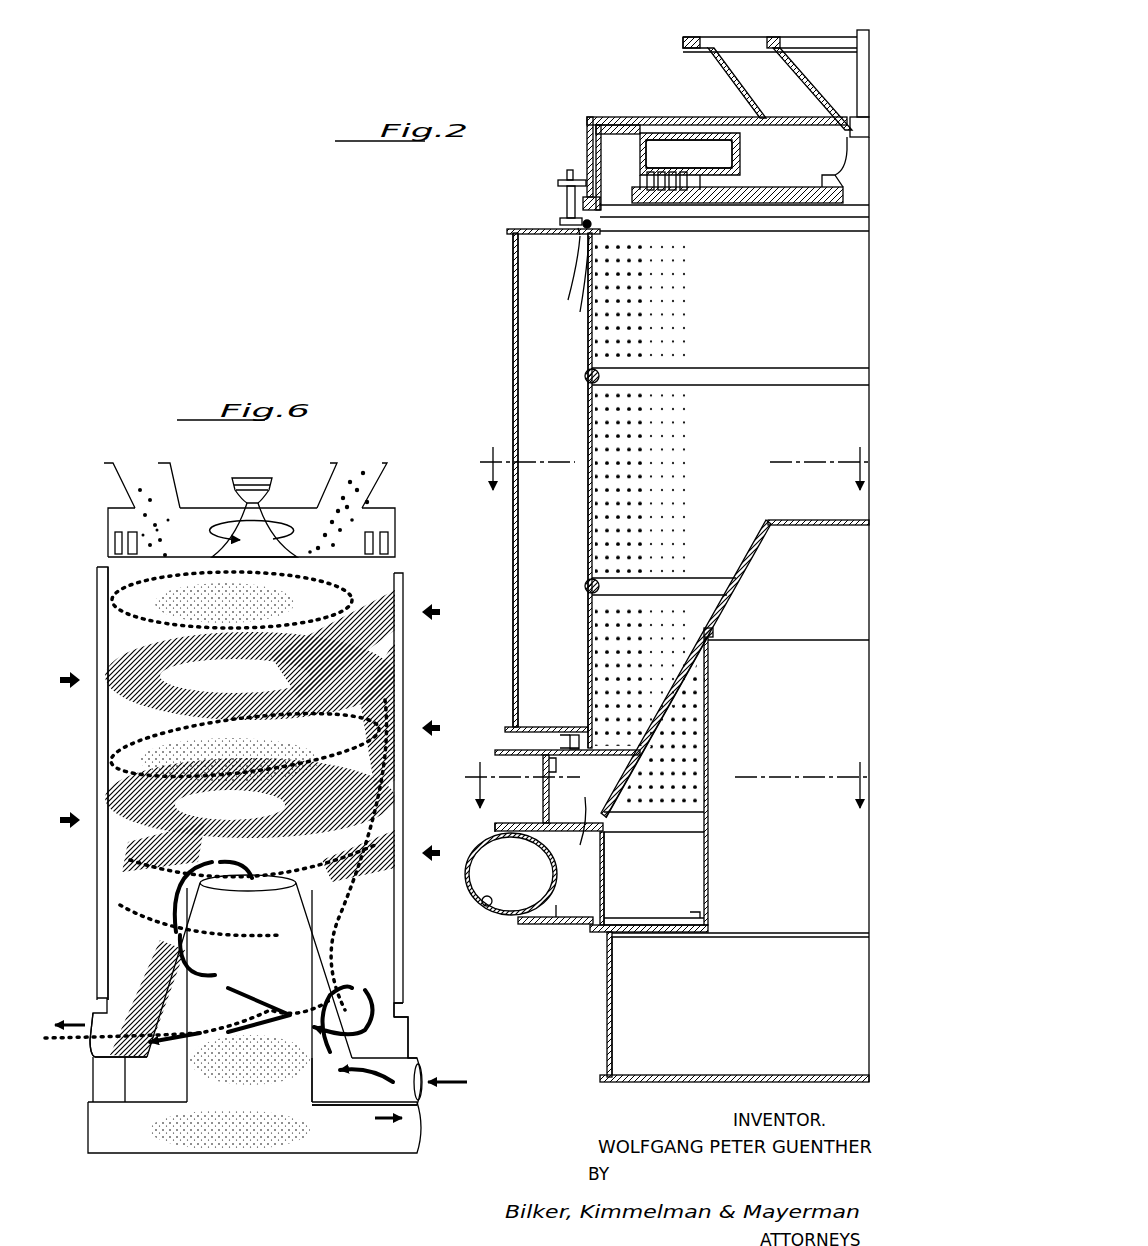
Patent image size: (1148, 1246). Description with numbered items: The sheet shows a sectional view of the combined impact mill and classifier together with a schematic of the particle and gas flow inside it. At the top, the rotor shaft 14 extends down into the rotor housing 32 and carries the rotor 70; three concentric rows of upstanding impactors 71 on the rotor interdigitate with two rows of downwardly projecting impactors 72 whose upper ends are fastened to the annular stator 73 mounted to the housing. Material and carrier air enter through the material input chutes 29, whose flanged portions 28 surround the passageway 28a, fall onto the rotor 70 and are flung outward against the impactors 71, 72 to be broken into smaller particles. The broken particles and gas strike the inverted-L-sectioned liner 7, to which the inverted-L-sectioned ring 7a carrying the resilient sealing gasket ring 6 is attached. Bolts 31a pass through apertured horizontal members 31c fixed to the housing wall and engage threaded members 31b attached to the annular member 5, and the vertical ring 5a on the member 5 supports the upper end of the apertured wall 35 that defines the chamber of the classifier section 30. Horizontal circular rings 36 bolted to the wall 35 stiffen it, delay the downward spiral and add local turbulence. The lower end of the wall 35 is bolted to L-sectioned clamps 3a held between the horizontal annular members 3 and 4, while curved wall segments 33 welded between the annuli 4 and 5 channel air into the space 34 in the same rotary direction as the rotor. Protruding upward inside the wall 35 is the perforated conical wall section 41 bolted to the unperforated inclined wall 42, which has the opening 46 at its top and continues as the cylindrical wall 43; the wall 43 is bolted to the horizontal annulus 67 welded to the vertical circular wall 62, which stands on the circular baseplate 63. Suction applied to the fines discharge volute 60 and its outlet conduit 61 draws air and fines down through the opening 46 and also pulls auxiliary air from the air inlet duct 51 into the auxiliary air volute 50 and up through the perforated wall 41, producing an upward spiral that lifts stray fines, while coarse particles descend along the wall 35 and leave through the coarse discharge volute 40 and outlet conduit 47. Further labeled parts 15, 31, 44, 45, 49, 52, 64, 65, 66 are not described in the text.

In FIG. 2, the horizontal annular member 3 is at (505, 751).
In FIG. 2, the L-sectioned clamp 3a is at (570, 742).
In FIG. 2, the horizontal annular member 4 is at (520, 728).
In FIG. 2, the annular member 5 is at (488, 216).
In FIG. 2, the vertical ring 5a is at (588, 268).
In FIG. 2, the resilient sealing gasket ring 6 is at (583, 248).
In FIG. 2, the inverted-L-sectioned member (liner) 7 is at (600, 197).
In FIG. 2, the inverted-L-sectioned ring 7a is at (578, 231).
In FIG. 2, the rotor shaft 14 is at (857, 76).
In FIG. 2, the top flange 15 is at (504, 252).
In FIG. 2, the flanged portion 28 is at (683, 42).
In FIG. 2, the passageway 28a is at (736, 55).
In FIG. 2, the material input chute 29 is at (733, 80).
In FIG. 6, the material input chute 29 is at (118, 483).
In FIG. 2, the classifier section 30 is at (513, 376).
In FIG. 6, the classifier section 30 is at (97, 646).
In FIG. 2, the bolt 31 is at (568, 172).
In FIG. 2, the bolt 31a is at (567, 200).
In FIG. 2, the threaded member 31b is at (560, 222).
In FIG. 2, the apertured horizontal member 31c is at (558, 182).
In FIG. 2, the rotor housing 32 is at (587, 133).
In FIG. 2, the curved wall segment 33 is at (513, 285).
In FIG. 6, the curved wall segment 33 is at (97, 601).
In FIG. 2, the space 34 is at (560, 322).
In FIG. 6, the space 34 is at (97, 745).
In FIG. 2, the apertured wall 35 is at (588, 521).
In FIG. 2, the horizontal circular metal ring 36 is at (703, 378).
In FIG. 2, the coarse discharge volute 40 is at (543, 797).
In FIG. 6, the coarse discharge volute 40 is at (400, 1042).
In FIG. 2, the truncated conical perforated wall section 41 is at (678, 691).
In FIG. 6, the truncated conical perforated wall section 41 is at (318, 976).
In FIG. 2, the inclined wall portion (cone) 42 is at (753, 552).
In FIG. 6, the inclined wall portion (cone) 42 is at (300, 898).
In FIG. 2, the vertical wall portion 43 is at (708, 699).
In FIG. 6, the vertical wall portion 43 is at (187, 1072).
In FIG. 2, the partition 44 is at (660, 815).
In FIG. 2, the box wall 45 is at (605, 876).
In FIG. 2, the opening 46 is at (800, 520).
In FIG. 6, the opening 46 is at (270, 880).
In FIG. 6, the outlet conduit 47 is at (103, 1050).
In FIG. 2, the pipe collar 49 is at (556, 768).
In FIG. 2, the auxiliary air volute 50 is at (600, 889).
In FIG. 6, the auxiliary air volute 50 is at (128, 1082).
In FIG. 2, the air inlet duct 51 is at (496, 912).
In FIG. 6, the air inlet duct 51 is at (410, 1073).
In FIG. 2, the pipe section 52 is at (557, 906).
In FIG. 2, the fines discharge volute 60 is at (607, 992).
In FIG. 6, the fines discharge volute 60 is at (117, 1135).
In FIG. 6, the outlet conduit 61 is at (388, 1148).
In FIG. 2, the vertical circular wall 62 is at (612, 1046).
In FIG. 2, the circular baseplate 63 is at (806, 1075).
In FIG. 2, the bottom plate 64 is at (534, 925).
In FIG. 2, the flange 65 is at (495, 828).
In FIG. 2, the flange edge 66 is at (495, 826).
In FIG. 2, the horizontal annulus 67 is at (652, 932).
In FIG. 2, the rotor 70 is at (780, 203).
In FIG. 6, the rotor 70 is at (184, 556).
In FIG. 2, the upstanding impactor 71 is at (664, 176).
In FIG. 6, the upstanding impactor 71 is at (133, 534).
In FIG. 2, the downwardly projecting impactor 72 is at (647, 181).
In FIG. 6, the downwardly projecting impactor 72 is at (115, 547).
In FIG. 2, the stator 73 is at (706, 172).